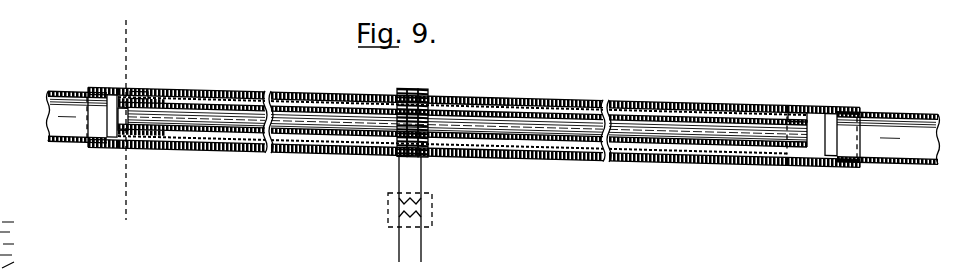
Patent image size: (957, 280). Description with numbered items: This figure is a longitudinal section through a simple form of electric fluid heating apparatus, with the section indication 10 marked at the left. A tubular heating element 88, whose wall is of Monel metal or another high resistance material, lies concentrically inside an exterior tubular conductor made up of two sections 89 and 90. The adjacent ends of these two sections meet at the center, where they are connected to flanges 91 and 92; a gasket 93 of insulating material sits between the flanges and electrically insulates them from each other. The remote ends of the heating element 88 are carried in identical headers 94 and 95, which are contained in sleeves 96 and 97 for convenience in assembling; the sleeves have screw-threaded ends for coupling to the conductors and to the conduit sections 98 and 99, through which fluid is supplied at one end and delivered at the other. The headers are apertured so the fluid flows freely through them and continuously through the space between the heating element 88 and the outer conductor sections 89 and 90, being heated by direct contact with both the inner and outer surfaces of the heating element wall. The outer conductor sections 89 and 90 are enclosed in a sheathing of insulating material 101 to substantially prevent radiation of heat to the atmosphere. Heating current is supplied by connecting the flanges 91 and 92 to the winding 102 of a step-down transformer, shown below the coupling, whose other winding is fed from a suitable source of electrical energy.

The section line 10- 10 is at (133, 122).
The tubular heating element 88 is at (287, 135).
The exterior conductor section 89 is at (320, 143).
The exterior conductor section 90 is at (543, 148).
The flange 91 is at (397, 157).
The flange 92 is at (427, 158).
The gasket 93 is at (413, 160).
The header 94 is at (137, 97).
The header 95 is at (815, 112).
The sleeve 96 is at (165, 90).
The sleeve 97 is at (848, 108).
The conduit section 98 is at (75, 130).
The conduit section 99 is at (907, 152).
The sheathing of insulating material 101 is at (230, 150).
The primary of step-down transformer 102 is at (395, 205).